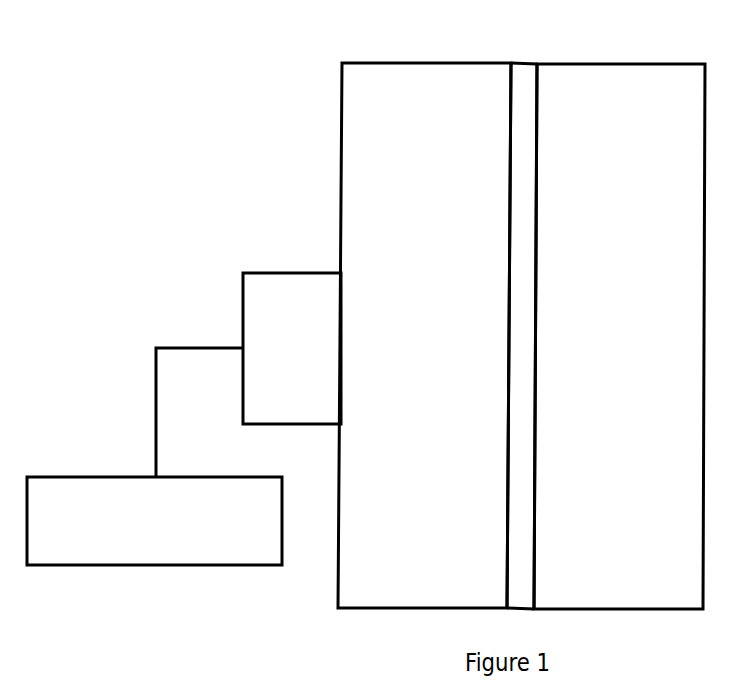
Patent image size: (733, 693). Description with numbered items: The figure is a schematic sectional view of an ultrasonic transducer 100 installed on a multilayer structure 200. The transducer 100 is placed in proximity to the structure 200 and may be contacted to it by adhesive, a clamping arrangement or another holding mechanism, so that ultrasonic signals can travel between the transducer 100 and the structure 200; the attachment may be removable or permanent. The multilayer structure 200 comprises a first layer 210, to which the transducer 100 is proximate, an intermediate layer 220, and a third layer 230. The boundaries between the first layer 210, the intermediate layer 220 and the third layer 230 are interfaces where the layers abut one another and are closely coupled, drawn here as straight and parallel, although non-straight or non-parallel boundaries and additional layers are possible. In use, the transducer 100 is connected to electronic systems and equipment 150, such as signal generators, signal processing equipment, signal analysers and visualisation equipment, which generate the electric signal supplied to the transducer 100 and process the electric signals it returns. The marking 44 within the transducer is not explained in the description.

The multilayer structure 200 is at (304, 123).
The first layer 210 is at (424, 335).
The intermediate layer 220 is at (524, 82).
The third layer 230 is at (619, 336).
The ultrasonic transducer 100 is at (292, 348).
The beam / signal 44 is at (293, 349).
The electronic systems and equipment 150 is at (154, 456).